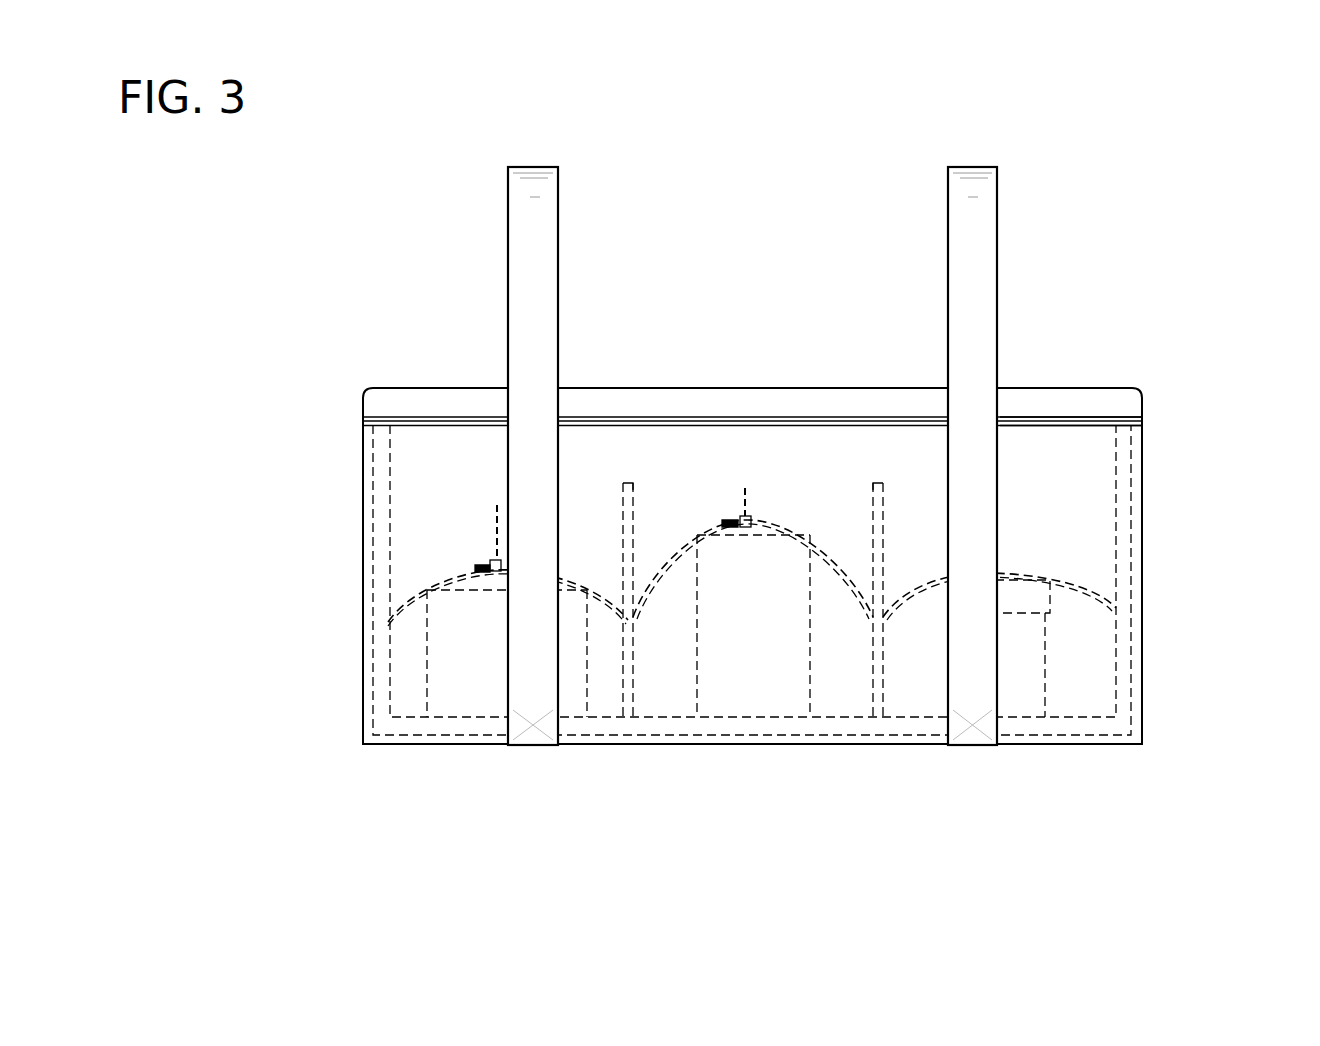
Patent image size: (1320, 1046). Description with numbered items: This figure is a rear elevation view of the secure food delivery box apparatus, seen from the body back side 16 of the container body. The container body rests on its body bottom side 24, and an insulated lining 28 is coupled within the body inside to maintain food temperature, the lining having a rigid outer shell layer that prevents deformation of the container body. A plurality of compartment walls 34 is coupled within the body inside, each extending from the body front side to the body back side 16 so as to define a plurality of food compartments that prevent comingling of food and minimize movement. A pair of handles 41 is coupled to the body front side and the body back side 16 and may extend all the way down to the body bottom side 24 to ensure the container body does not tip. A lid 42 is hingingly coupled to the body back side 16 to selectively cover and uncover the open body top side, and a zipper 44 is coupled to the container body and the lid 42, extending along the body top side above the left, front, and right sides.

The body back side 16 is at (1092, 502).
The body bottom side 24 is at (837, 745).
The insulated lining 28 is at (1132, 557).
The compartment walls 34 is at (875, 483).
The pair of handles 41 is at (960, 215).
The lid 42 is at (866, 403).
The zipper 44 is at (1030, 425).